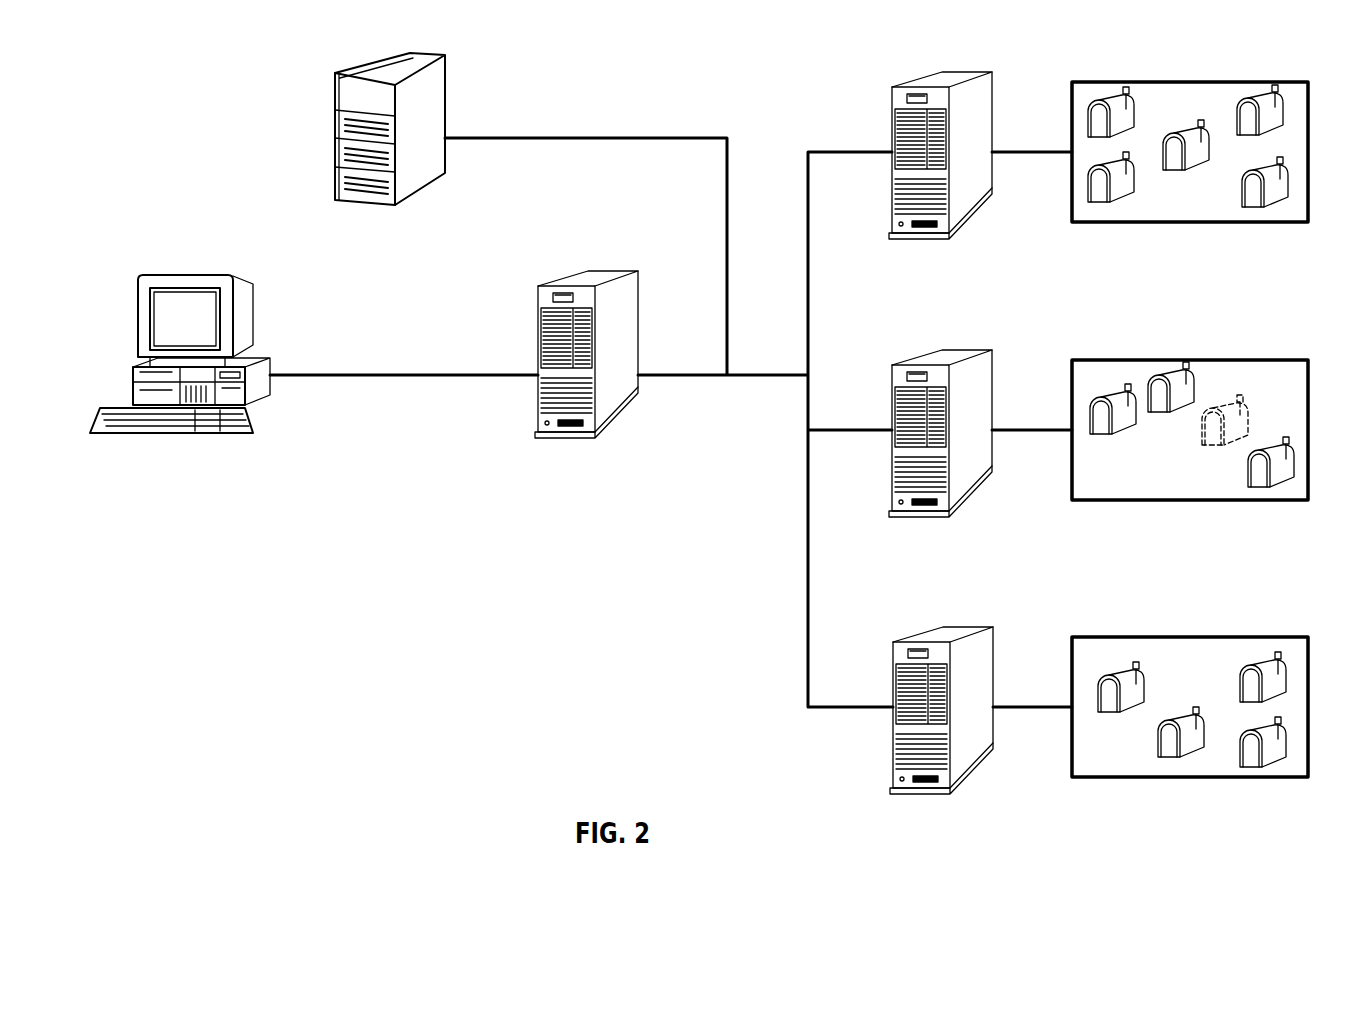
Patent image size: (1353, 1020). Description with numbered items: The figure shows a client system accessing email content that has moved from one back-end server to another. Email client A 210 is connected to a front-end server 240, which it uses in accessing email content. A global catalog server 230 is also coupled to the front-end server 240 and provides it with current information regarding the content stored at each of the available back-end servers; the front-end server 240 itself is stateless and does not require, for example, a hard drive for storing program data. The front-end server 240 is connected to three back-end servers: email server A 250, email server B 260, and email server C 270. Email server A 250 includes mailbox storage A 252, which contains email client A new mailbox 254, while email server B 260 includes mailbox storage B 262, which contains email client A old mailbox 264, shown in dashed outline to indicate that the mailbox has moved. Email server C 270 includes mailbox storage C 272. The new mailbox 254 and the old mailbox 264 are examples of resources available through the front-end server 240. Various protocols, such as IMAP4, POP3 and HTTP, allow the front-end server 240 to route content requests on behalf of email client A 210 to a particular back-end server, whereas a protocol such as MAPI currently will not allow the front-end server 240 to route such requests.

The email client A 210 is at (162, 315).
The global catalog server 230 is at (345, 95).
The front-end server 240 is at (578, 272).
The email server A 250 is at (903, 100).
The mailbox storage A 252 is at (1174, 212).
The email client A new mailbox 254 is at (1205, 142).
The email server B 260 is at (903, 378).
The mailbox storage B 262 is at (1132, 483).
The email client A old mailbox 264 is at (1245, 412).
The email server C 270 is at (903, 655).
The mailbox storage C 272 is at (1134, 762).